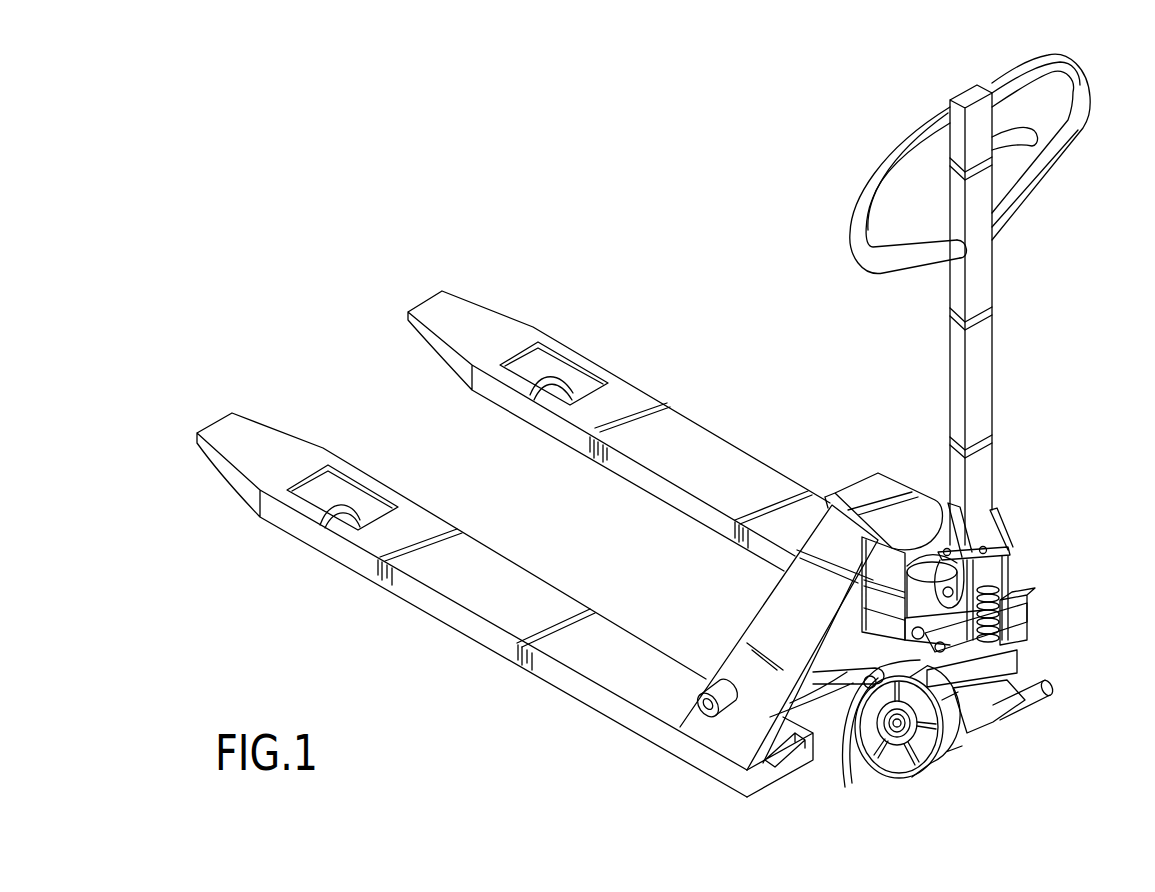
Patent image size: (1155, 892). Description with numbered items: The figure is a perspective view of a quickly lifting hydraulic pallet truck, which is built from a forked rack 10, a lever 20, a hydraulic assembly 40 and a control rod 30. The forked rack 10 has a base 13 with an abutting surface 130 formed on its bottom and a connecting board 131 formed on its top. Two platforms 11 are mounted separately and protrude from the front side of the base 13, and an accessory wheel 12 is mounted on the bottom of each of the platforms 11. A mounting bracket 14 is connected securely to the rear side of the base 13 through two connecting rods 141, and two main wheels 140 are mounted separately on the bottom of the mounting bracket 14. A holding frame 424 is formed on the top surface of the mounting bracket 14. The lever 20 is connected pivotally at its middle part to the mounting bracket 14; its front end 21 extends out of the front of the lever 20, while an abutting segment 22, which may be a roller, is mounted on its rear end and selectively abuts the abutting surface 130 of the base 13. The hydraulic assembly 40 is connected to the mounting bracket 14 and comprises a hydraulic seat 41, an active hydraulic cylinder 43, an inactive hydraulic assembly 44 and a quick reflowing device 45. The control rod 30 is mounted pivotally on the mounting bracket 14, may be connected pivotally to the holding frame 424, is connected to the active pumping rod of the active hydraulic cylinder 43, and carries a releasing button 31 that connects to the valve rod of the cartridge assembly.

The forked rack 10 is at (570, 548).
The platforms 11 is at (697, 438).
The accessory wheels 12 is at (343, 508).
The base 13 is at (753, 628).
The abutting surface 130 is at (697, 710).
The connecting board 131 is at (883, 484).
The connecting rods 141 is at (827, 692).
The mounting bracket 14 is at (957, 700).
The main wheels 140 is at (900, 767).
The lever 20 is at (993, 715).
The front end 21 is at (1047, 700).
The abutting segment 22 is at (843, 694).
The control rod 30 is at (987, 327).
The releasing button 31 is at (1015, 142).
The hydraulic assembly 40 is at (1002, 587).
The hydraulic seat 41 is at (1015, 640).
The holding frame 424 is at (983, 603).
The active hydraulic cylinder 43 is at (960, 617).
The inactive hydraulic assembly 44 is at (923, 573).
The quick reflowing device 45 is at (1003, 676).